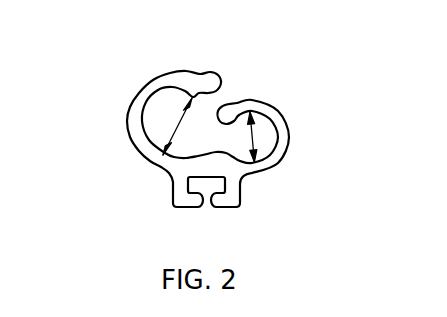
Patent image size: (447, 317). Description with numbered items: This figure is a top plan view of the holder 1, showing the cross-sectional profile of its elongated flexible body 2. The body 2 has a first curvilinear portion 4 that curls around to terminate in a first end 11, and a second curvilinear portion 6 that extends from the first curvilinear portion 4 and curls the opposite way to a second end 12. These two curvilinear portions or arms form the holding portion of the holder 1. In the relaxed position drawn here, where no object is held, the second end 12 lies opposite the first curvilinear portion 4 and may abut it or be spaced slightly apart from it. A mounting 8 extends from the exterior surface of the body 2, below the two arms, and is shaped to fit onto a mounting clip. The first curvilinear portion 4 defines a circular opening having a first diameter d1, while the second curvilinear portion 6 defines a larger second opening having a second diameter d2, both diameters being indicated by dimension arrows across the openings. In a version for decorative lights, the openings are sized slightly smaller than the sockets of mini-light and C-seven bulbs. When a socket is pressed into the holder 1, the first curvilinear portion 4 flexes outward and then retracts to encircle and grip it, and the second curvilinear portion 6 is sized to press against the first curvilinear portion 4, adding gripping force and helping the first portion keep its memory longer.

The holder 1 is at (221, 133).
The elongated flexible body 2 is at (300, 124).
The first curvilinear portion 4 is at (280, 135).
The second curvilinear portion 6 is at (141, 94).
The mounting 8 is at (219, 204).
The first end 11 is at (223, 107).
The second end 12 is at (213, 72).
The first diameter d1 is at (254, 162).
The second diameter d2 is at (163, 155).